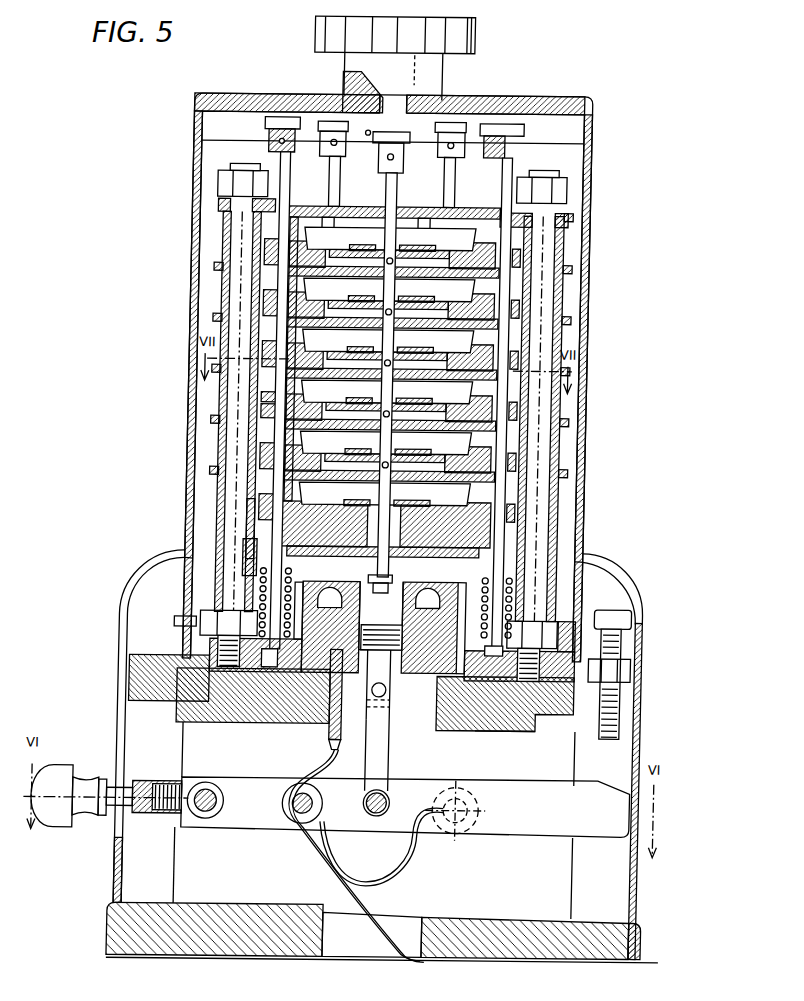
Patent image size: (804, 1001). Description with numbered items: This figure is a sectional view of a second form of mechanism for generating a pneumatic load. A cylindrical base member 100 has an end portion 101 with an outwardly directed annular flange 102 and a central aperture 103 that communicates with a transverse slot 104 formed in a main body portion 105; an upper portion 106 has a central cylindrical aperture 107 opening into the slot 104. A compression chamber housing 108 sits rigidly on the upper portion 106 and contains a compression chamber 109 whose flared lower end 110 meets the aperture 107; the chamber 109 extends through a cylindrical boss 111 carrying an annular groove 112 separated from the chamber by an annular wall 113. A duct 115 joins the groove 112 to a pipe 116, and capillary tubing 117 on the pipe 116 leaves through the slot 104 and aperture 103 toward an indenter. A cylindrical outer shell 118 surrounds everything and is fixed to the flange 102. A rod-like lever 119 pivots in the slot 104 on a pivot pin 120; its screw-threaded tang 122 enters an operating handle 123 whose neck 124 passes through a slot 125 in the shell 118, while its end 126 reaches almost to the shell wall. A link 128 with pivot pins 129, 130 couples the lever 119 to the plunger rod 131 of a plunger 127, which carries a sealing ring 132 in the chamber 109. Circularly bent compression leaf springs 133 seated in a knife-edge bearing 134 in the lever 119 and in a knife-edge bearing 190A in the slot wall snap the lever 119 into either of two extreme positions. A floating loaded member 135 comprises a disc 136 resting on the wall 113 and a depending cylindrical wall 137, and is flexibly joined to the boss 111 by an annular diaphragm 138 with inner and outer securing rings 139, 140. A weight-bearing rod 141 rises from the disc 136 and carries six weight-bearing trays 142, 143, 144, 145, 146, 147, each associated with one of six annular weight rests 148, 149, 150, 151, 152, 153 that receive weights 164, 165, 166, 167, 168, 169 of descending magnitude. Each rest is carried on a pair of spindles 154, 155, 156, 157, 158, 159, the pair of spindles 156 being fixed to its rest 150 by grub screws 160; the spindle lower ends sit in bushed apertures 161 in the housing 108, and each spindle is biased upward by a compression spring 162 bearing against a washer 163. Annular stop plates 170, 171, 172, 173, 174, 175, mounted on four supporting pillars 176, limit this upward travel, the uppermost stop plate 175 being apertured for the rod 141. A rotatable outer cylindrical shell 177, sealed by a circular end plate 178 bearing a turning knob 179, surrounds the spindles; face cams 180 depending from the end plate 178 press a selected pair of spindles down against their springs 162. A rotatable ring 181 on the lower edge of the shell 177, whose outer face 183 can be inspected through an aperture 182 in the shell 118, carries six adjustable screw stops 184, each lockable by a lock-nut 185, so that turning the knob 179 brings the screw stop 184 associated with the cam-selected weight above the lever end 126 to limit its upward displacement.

The cylindrical base member 100 is at (192, 971).
The end portion 101 is at (247, 958).
The outwardly directed annular flange 102 is at (620, 921).
The central aperture 103 is at (342, 958).
The transverse slot 104 is at (239, 771).
The main body portion 105 is at (182, 860).
The upper portion 106 is at (185, 717).
The central cylindrical aperture 107 is at (450, 730).
The compression chamber housing 108 is at (510, 731).
The compression chamber 109 is at (372, 617).
The lower end 110 is at (343, 745).
The cylindrical boss 111 is at (468, 600).
The annular groove 112 is at (506, 645).
The annular wall 113 is at (305, 583).
The duct 115 is at (278, 724).
The pipe 116 is at (333, 726).
The capillary tubing 117 is at (334, 878).
The cylindrical outer shell 118 is at (122, 640).
The rod-like lever 119 is at (247, 836).
The pivot pin 120 is at (212, 820).
The screw-threaded tang 122 is at (162, 786).
The operating handle 123 is at (64, 775).
The neck 124 is at (145, 810).
The slot 125 is at (118, 832).
The end of the lever 126 is at (640, 790).
The plunger 127 is at (470, 585).
The link 128 is at (394, 765).
The pivot pin 129 is at (386, 818).
The pivot pin 130 is at (394, 705).
The plunger rod 131 is at (391, 689).
The sealing ring 132 is at (405, 638).
The compression leaf springs 133 is at (421, 876).
The knife-edge bearing 134 is at (300, 818).
The floating loaded member 135 is at (405, 575).
The disc 136 is at (364, 582).
The cylindrical wall 137 is at (345, 580).
The annular diaphragm 138 is at (462, 588).
The inner securing ring 139 is at (332, 597).
The outer securing ring 140 is at (330, 625).
The weight-bearing rod 141 is at (392, 347).
The weight-bearing tray 142 is at (424, 547).
The weight-bearing tray 143 is at (364, 462).
The weight-bearing tray 144 is at (364, 410).
The weight-bearing tray 145 is at (364, 358).
The weight-bearing tray 146 is at (364, 304).
The weight-bearing tray 147 is at (418, 238).
The annular weight rest 148 is at (248, 550).
The annular weight rest 149 is at (213, 372).
The annular weight rest 150 is at (259, 410).
The annular weight rest 151 is at (240, 330).
The annular weight rest 152 is at (259, 294).
The annular weight rest 153 is at (259, 242).
The pair of spindles 154 is at (447, 165).
The pair of spindles 155 is at (474, 155).
The pair of spindles 156 is at (273, 160).
The pair of spindles 157 is at (289, 130).
The pair of spindles 158 is at (316, 122).
The pair of spindles 159 is at (392, 170).
The grub screws 160 is at (259, 396).
The bushed apertures 161 is at (230, 724).
The compression spring 162 is at (262, 600).
The washer 163 is at (245, 575).
The weight 164 is at (417, 507).
The weight 165 is at (305, 454).
The weight 166 is at (305, 402).
The weight 167 is at (305, 350).
The weight 168 is at (302, 297).
The weight 169 is at (322, 238).
The annular stop plate 170 is at (567, 472).
The annular stop plate 171 is at (567, 421).
The annular stop plate 172 is at (567, 370).
The annular stop plate 173 is at (567, 318).
The annular stop plate 174 is at (567, 268).
The uppermost stop plate 175 is at (567, 214).
The supporting pillars 176 is at (225, 170).
The rotatable outer cylindrical shell 177 is at (584, 170).
The circular end plate 178 is at (486, 122).
The turning knob 179 is at (465, 35).
The face cam 180 is at (360, 131).
The rotatable ring 181 is at (630, 675).
The aperture 182 is at (178, 625).
The outer face 183 is at (210, 632).
The screw stop 184 is at (624, 628).
The lock-nut 185 is at (622, 655).
The knife-edge bearing 190A is at (486, 810).